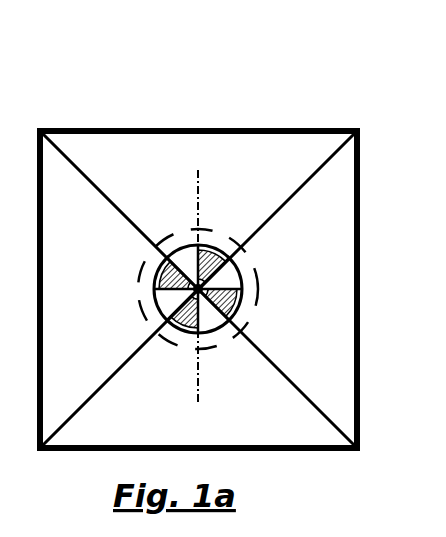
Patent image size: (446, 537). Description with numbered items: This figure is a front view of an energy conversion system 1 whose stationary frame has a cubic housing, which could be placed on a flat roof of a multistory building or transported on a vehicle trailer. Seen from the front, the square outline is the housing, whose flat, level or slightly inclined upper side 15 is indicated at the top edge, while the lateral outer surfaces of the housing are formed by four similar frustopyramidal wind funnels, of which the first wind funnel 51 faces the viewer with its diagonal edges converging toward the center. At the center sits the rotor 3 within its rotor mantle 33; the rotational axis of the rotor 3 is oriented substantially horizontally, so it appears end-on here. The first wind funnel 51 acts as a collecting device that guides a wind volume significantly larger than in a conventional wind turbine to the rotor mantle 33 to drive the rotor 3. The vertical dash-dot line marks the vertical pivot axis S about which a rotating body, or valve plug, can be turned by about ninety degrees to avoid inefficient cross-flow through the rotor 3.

The energy conversion system 1 is at (240, 48).
The upper side 15 is at (78, 124).
The first wind funnel 51 is at (252, 181).
The vertical pivot axis S is at (195, 212).
The rotor 3 is at (232, 260).
The rotor mantle 33 is at (238, 312).